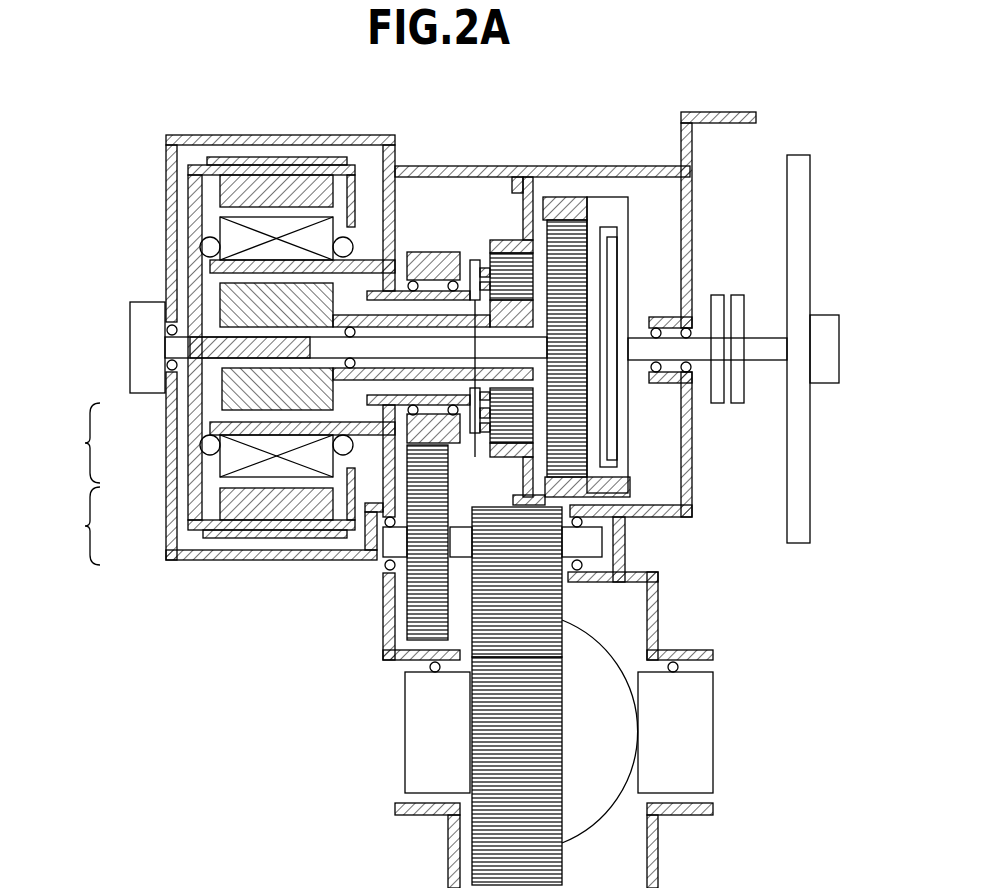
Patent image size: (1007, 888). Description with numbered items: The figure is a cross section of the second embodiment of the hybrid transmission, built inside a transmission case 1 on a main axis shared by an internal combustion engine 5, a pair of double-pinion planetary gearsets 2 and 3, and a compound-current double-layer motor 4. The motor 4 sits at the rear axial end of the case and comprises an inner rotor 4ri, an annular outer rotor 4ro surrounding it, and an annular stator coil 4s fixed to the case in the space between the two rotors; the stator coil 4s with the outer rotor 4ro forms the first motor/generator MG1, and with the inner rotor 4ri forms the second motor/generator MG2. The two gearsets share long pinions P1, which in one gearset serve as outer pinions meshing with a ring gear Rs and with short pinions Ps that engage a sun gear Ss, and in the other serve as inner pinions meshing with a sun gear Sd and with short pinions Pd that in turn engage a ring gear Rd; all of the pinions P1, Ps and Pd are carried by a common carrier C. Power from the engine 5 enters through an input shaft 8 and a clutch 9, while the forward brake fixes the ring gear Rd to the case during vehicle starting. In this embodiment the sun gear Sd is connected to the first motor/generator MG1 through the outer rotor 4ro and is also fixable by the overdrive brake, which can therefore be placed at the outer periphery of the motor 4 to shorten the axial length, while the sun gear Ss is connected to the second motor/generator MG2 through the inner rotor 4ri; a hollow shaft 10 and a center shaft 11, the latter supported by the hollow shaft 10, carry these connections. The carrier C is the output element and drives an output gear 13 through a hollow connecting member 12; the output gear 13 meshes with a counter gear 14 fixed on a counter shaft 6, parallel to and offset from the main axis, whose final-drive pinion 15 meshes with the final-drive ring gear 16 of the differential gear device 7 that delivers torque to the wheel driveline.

The transmission case 1 is at (413, 166).
The double-pinion planetary gearset 2 is at (505, 238).
The double-pinion planetary gearset 3 is at (596, 188).
The compound-current double-layer motor 4 is at (192, 160).
The inner rotor 4ri is at (230, 390).
The stator coil 4s is at (233, 462).
The outer rotor 4ro is at (240, 503).
The internal combustion engine 5 is at (824, 333).
The counter shaft 6 is at (587, 540).
The differential gear device 7 is at (618, 637).
The input shaft 8 is at (699, 347).
The clutch 9 is at (727, 344).
The hollow shaft 10 is at (375, 380).
The center shaft 11 is at (323, 348).
The hollow connecting member 12 is at (470, 262).
The output gear 13 is at (413, 267).
The counter gear 14 is at (423, 598).
The final-drive pinion 15 is at (530, 537).
The final-drive ring gear 16 is at (532, 637).
The common carrier C is at (476, 292).
The first motor/generator MG1 is at (65, 526).
The second motor/generator MG2 is at (65, 443).
The sun gear Ss is at (470, 394).
The short pinions Ps is at (507, 287).
The ring gear Rs is at (526, 177).
The sun gear Sd is at (568, 323).
The short pinions Pd is at (570, 236).
The ring gear Rd is at (560, 198).
The long pinions P1 is at (570, 267).